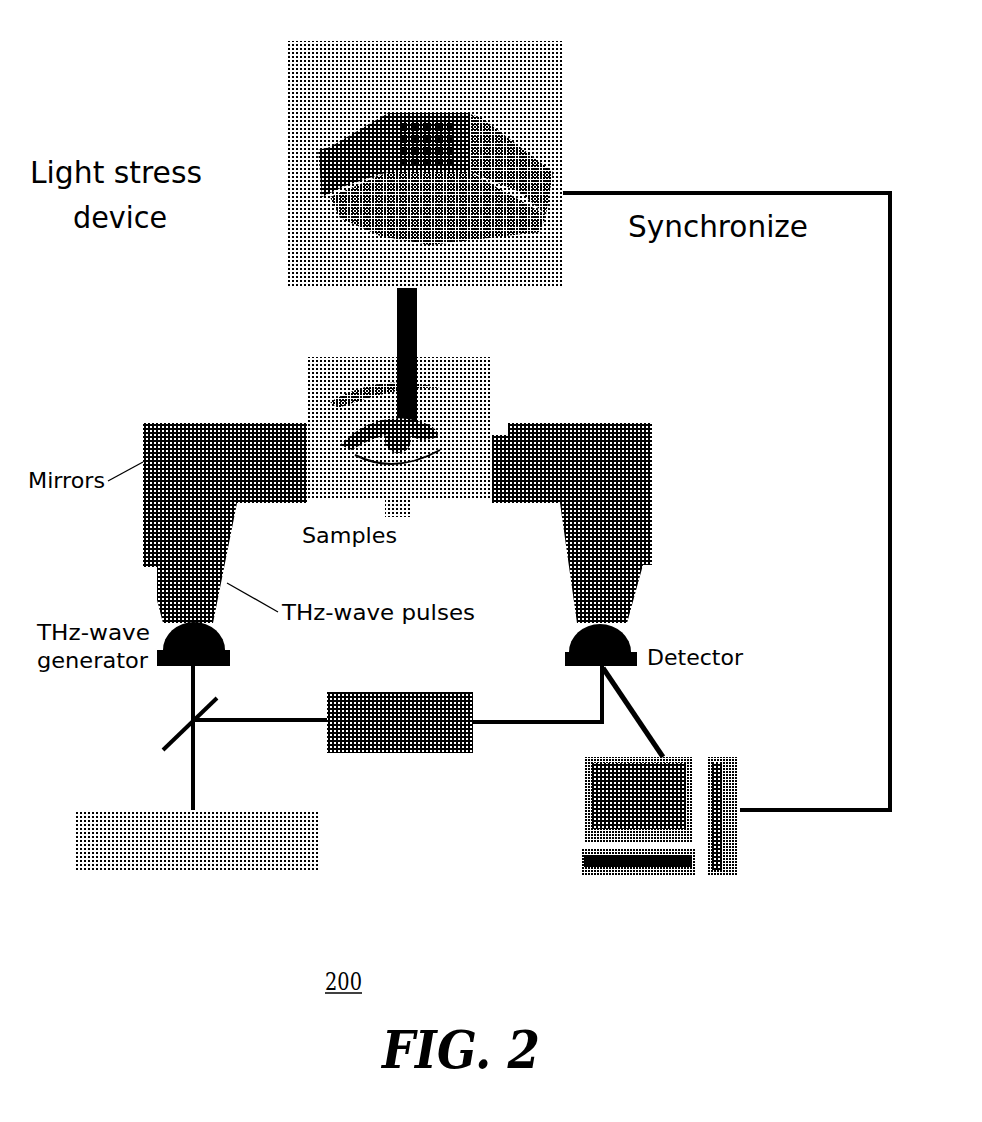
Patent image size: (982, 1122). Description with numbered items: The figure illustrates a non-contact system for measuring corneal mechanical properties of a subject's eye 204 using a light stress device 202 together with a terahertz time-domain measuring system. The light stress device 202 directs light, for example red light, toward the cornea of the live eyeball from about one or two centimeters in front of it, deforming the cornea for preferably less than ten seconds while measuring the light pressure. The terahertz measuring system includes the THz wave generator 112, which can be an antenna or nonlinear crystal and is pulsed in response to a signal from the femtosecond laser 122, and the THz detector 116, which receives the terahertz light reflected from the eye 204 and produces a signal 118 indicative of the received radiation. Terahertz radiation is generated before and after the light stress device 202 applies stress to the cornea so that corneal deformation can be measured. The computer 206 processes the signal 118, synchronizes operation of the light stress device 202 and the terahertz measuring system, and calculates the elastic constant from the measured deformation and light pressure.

The light stress device 202 is at (413, 42).
The subject's eye 204 is at (445, 354).
The THz wave generator 112 is at (212, 667).
The THz detector 116 is at (581, 668).
The signal 118 is at (635, 714).
The computer 206 is at (585, 795).
The femtosecond laser 122 is at (178, 873).